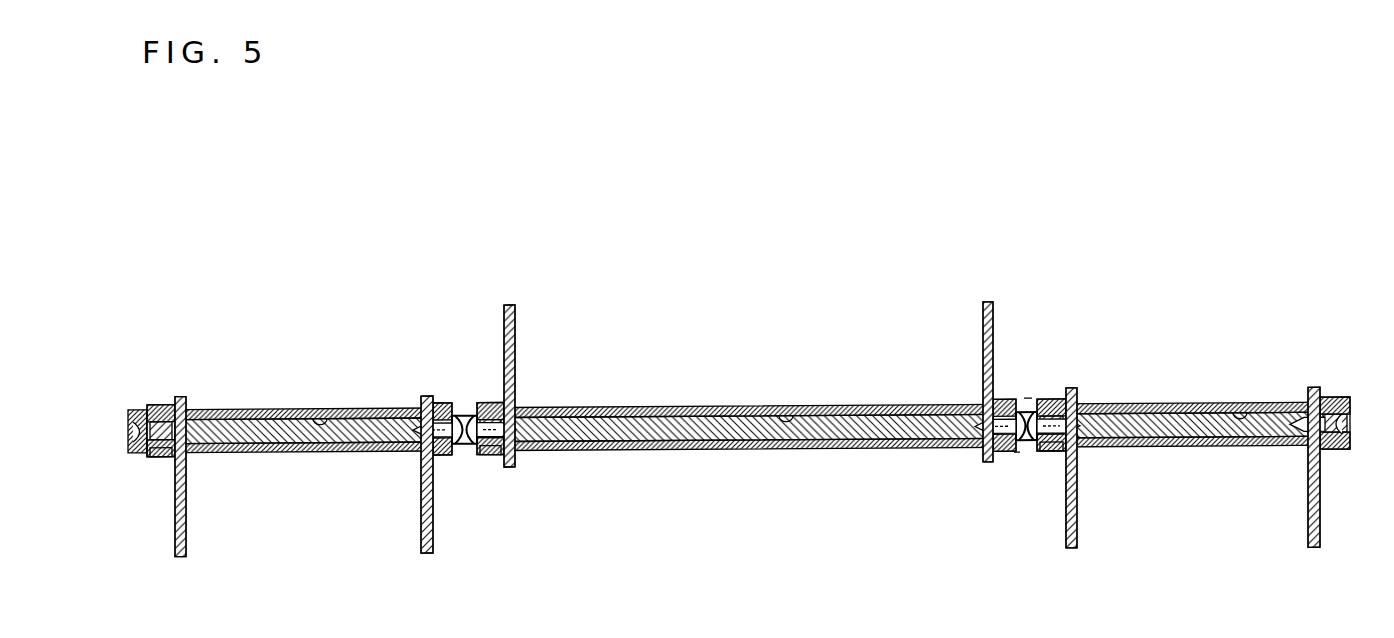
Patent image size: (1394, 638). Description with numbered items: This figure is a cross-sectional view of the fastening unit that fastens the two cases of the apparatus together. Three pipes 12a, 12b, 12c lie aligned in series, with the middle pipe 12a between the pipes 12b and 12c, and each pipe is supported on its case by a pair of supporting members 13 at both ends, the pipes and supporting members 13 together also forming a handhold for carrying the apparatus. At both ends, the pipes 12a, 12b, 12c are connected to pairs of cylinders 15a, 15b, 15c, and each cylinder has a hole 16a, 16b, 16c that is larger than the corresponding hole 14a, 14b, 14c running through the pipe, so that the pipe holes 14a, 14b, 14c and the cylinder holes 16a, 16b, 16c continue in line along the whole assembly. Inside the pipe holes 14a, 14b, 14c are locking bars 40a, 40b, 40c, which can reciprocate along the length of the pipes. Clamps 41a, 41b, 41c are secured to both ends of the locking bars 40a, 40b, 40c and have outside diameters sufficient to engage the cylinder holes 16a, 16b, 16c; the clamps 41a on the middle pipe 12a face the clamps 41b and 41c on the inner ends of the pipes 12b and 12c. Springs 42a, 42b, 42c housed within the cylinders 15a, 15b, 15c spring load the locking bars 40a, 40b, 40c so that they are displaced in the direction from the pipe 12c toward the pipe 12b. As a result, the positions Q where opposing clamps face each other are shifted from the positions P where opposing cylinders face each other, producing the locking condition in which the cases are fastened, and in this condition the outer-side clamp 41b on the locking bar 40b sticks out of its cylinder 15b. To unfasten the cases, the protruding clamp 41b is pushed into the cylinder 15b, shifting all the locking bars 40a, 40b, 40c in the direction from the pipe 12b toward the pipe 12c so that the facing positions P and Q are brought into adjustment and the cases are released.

The pipe 12a is at (727, 406).
The pipe 12b is at (280, 406).
The pipe 12c is at (1185, 406).
The supporting member 13 is at (182, 554).
The hole 14a is at (801, 406).
The hole 14b is at (327, 406).
The hole 14c is at (1240, 406).
The cylinder 15a is at (489, 401).
The cylinder 15b is at (165, 401).
The cylinder 15c is at (1042, 401).
The hole 16a is at (497, 401).
The hole 16b is at (152, 399).
The hole 16c is at (1058, 401).
The locking bar 40a is at (775, 436).
The locking bar 40b is at (287, 432).
The locking bar 40c is at (1190, 431).
The clamp 41a is at (477, 458).
The clamp 41b is at (133, 452).
The clamp 41c is at (1038, 455).
The spring 42a is at (490, 457).
The spring 42b is at (158, 453).
The spring 42c is at (1060, 456).
The position where opposing cylinders are faced P is at (1028, 398).
The position where opposing clamps are faced Q is at (1017, 454).